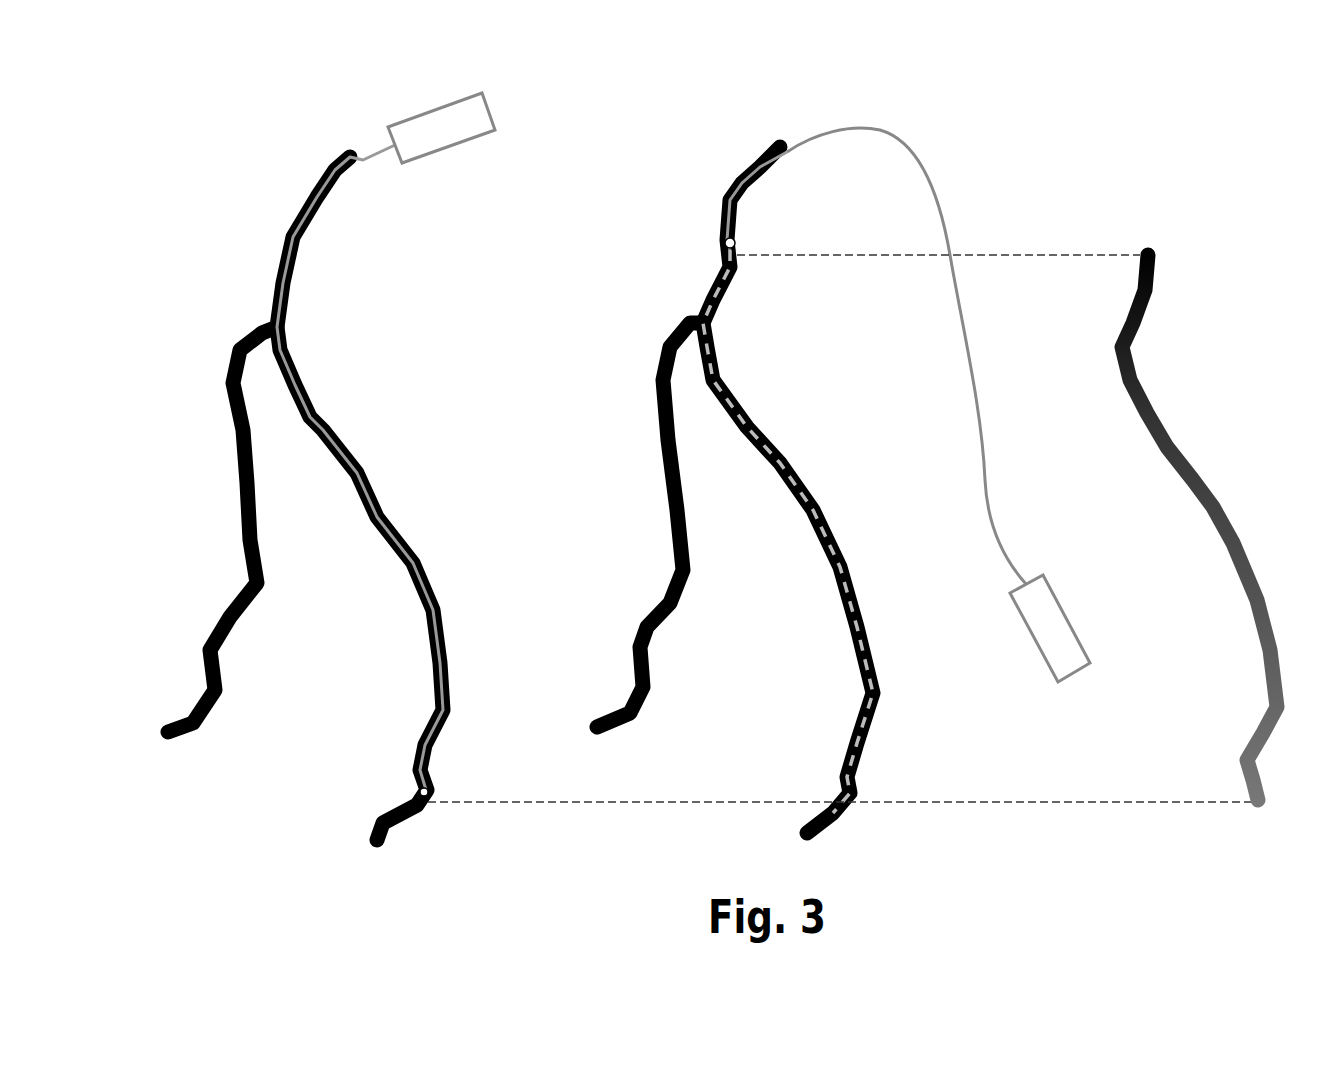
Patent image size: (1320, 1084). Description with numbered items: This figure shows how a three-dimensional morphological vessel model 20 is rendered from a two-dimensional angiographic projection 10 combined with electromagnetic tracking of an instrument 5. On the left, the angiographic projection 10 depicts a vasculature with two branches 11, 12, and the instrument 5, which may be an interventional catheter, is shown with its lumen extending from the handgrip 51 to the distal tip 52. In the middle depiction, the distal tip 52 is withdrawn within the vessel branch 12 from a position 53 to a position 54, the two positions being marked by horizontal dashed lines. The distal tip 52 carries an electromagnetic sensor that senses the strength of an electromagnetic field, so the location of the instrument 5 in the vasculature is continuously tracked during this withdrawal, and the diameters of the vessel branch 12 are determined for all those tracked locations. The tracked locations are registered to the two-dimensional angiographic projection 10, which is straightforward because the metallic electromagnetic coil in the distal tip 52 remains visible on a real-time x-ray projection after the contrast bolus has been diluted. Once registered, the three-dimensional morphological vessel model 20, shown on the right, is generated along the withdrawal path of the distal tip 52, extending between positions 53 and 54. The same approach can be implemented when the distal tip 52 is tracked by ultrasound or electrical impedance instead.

The two-dimensional angiographic projection 10 is at (283, 152).
The vessel branch 11 is at (237, 493).
The vessel branch 12 is at (332, 432).
The instrument 5 is at (917, 152).
The three-dimensional morphological vessel model 20 is at (1165, 308).
The handgrip 51 is at (483, 132).
The distal tip 52 is at (420, 792).
The position 53 is at (1020, 802).
The position 54 is at (1007, 255).